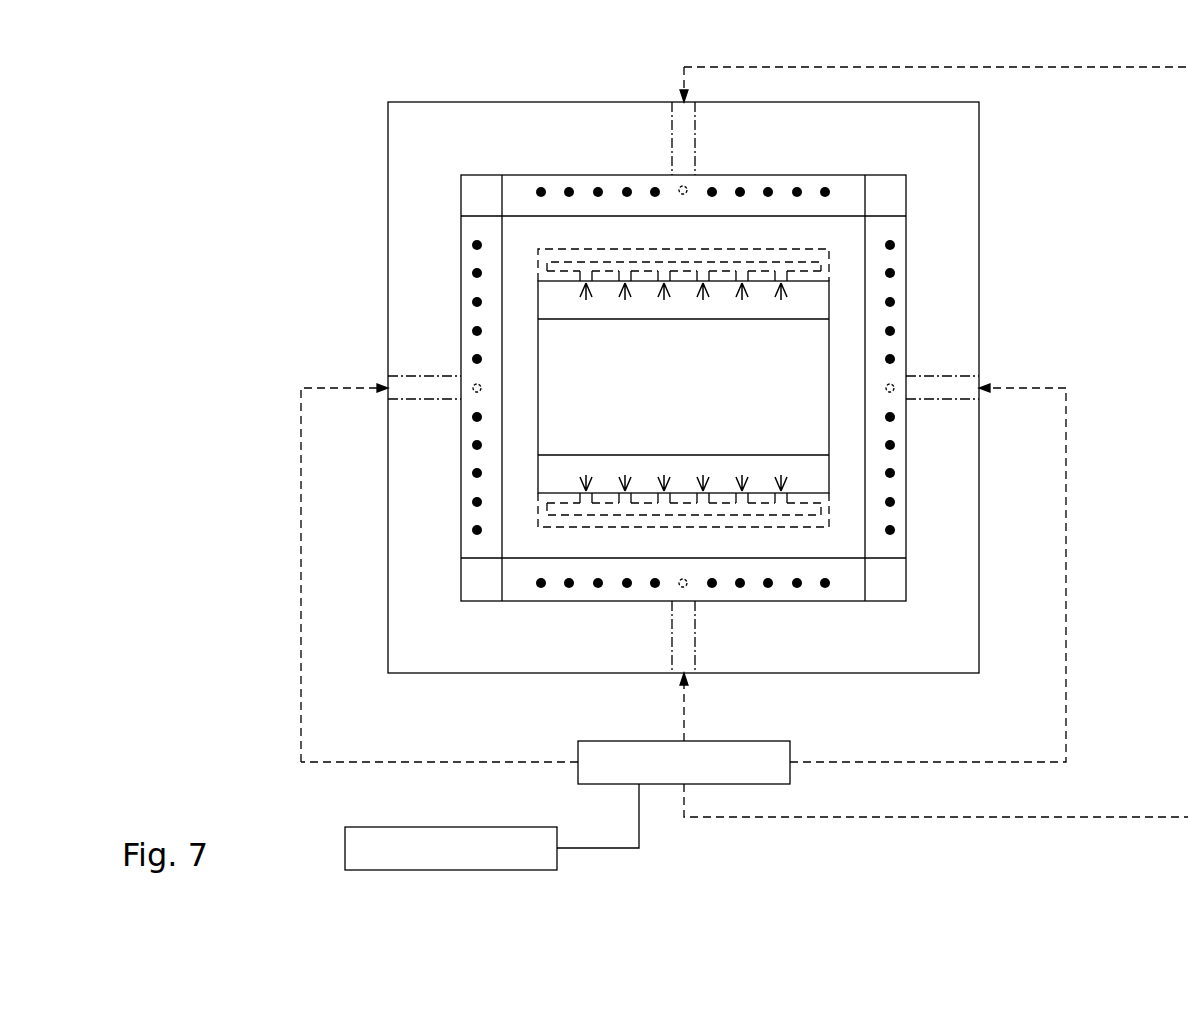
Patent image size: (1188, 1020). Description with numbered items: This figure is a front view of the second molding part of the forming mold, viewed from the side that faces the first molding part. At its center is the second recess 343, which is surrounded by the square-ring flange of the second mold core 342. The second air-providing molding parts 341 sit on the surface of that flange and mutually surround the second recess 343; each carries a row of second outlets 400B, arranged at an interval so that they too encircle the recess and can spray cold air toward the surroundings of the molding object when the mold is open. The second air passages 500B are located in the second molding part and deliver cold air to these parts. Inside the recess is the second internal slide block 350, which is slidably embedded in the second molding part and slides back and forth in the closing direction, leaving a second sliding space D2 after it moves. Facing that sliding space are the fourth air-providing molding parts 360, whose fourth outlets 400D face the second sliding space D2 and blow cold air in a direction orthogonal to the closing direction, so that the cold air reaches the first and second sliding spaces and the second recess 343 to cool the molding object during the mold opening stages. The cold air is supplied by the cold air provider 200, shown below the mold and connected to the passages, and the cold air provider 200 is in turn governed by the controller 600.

The cold air provider 200 is at (578, 772).
The controller 600 is at (345, 843).
The second air-providing molding part 341 is at (849, 190).
The second mold core 342 is at (901, 205).
The second recess 343 is at (532, 234).
The second internal slide block 350 is at (560, 303).
The fourth air-providing molding part 360 is at (736, 247).
The second outlets 400B is at (570, 186).
The second air passages 500B is at (682, 185).
The fourth outlets 400D is at (705, 493).
The second sliding space D2 is at (812, 302).